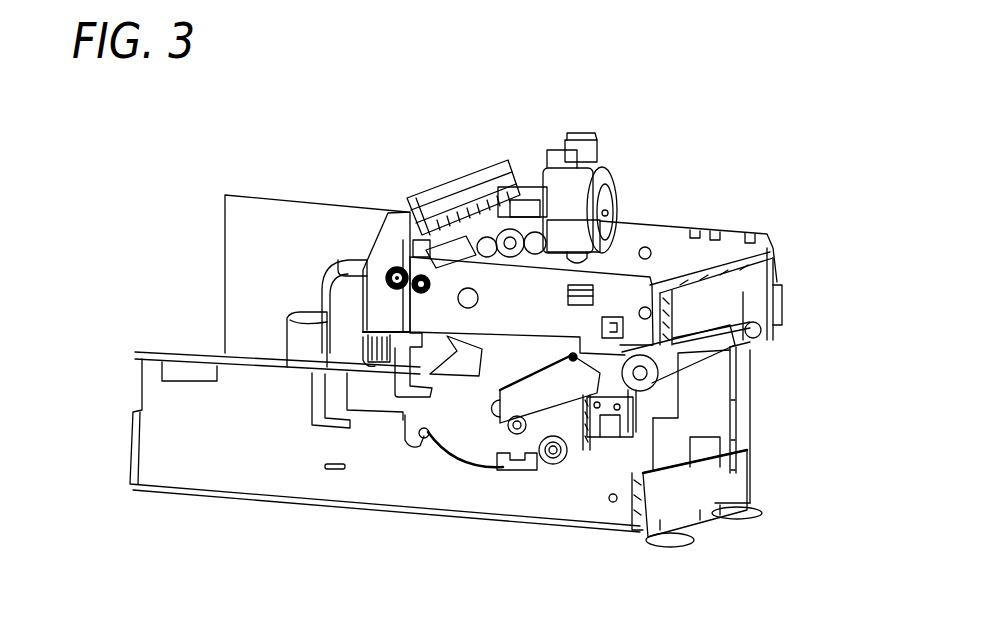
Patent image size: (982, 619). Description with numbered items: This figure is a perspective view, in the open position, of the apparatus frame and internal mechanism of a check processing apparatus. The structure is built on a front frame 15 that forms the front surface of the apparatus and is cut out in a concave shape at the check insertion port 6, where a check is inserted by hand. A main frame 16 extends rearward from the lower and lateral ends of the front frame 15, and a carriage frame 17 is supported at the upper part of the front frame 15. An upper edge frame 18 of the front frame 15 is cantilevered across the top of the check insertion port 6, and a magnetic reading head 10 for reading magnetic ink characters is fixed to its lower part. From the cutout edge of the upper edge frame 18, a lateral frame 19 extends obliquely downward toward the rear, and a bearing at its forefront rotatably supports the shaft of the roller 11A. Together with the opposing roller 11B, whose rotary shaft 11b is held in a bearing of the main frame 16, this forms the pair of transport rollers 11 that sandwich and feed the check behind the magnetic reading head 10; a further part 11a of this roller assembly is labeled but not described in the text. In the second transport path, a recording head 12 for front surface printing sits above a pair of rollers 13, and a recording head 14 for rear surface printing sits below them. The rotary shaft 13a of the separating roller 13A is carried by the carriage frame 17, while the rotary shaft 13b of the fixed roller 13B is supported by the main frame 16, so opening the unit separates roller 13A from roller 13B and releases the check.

The check insertion port 6 is at (701, 406).
The magnetic reading head 10 is at (622, 452).
The pair of transport rollers 11 is at (488, 443).
The roller 11A is at (586, 443).
The roller 11B is at (555, 465).
The cam portion 11a is at (490, 413).
The rotary shaft 11b is at (512, 470).
The recording head 12 is at (525, 178).
The pair of rollers 13 is at (433, 237).
The separating roller 13A is at (452, 247).
The fixed roller 13B is at (434, 247).
The rotary shaft 13a is at (411, 292).
The rotary shaft 13b is at (386, 283).
The recording head 14 is at (361, 247).
The front frame 15 is at (759, 409).
The main frame 16 is at (428, 496).
The carriage frame 17 is at (682, 226).
The upper edge frame 18 is at (698, 350).
The lateral frame 19 is at (408, 442).